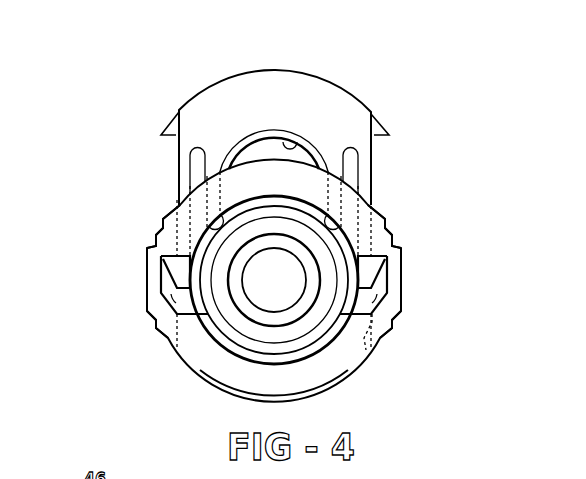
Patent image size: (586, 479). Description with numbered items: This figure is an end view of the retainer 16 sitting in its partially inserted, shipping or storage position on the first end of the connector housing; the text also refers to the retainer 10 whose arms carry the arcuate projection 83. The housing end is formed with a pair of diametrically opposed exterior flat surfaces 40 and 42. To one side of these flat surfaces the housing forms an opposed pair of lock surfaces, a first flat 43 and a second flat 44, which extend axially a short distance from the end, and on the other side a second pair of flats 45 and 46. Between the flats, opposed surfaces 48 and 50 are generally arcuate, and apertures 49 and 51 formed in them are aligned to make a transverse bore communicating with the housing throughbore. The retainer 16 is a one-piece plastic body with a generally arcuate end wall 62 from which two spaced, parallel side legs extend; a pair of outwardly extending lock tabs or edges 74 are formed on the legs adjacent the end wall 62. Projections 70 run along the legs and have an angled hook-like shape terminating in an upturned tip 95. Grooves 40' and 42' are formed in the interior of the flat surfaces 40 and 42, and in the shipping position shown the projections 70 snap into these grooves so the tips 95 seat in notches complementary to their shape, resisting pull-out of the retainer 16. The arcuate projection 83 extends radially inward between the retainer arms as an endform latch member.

The retainer 10 is at (423, 110).
The retainer 16 is at (101, 182).
The exterior flat surface 40 is at (413, 285).
The groove 40' is at (429, 309).
The exterior flat surface 42 is at (129, 284).
The groove 42' is at (129, 298).
The first flat 43 is at (388, 335).
The second flat 44 is at (160, 334).
The flat 45 is at (162, 218).
The flat 46 is at (376, 207).
The arcuate surface 48 is at (257, 155).
The aperture 49 is at (373, 192).
The arcuate surface 50 is at (205, 372).
The aperture 51 is at (366, 350).
The end wall 62 is at (325, 72).
The projection 70 is at (78, 10).
The lock tab 74 is at (170, 121).
The arcuate projection 83 is at (277, 135).
The tip 95 is at (147, 262).